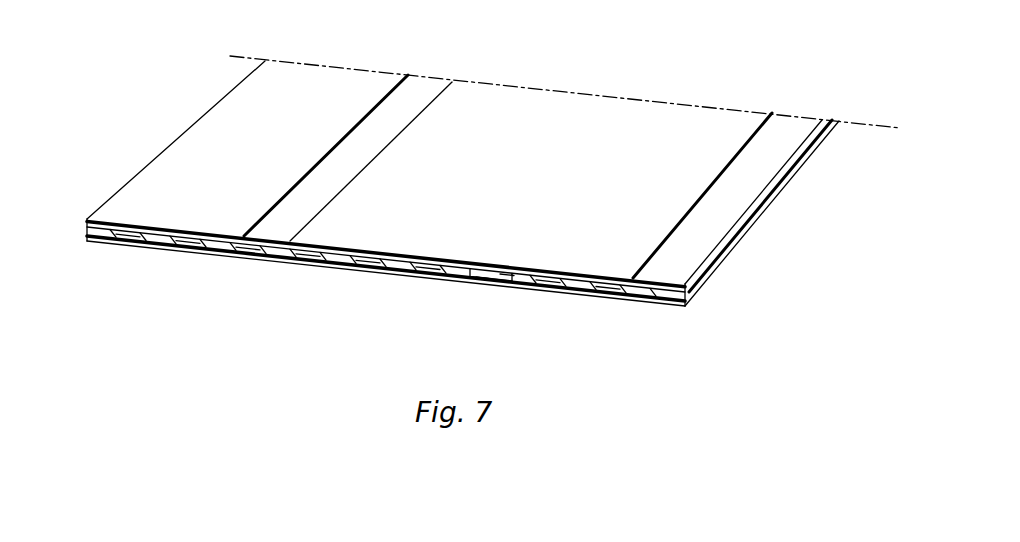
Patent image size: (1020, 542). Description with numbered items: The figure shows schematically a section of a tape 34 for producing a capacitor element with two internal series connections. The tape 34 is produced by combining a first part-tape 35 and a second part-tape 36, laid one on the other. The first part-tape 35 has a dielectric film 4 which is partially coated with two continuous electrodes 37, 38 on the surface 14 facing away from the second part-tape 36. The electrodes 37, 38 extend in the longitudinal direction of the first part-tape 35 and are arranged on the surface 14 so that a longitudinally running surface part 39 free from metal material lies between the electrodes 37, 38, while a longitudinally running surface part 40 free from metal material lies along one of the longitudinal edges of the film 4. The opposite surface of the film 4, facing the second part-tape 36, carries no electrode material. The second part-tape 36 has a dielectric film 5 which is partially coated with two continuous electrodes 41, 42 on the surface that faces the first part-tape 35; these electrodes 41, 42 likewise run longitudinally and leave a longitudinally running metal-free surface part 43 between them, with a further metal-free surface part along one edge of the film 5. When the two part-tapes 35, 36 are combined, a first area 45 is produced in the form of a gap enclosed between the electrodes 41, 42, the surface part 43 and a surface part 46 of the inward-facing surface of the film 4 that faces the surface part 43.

The dielectric film 4 is at (87, 223).
The dielectric film 5 is at (87, 239).
The surface 14 is at (412, 124).
The tape 34 is at (461, 50).
The first part-tape 35 is at (136, 112).
The second part-tape 36 is at (692, 330).
The electrode 37 is at (271, 154).
The electrode 38 is at (538, 182).
The surface part 39 is at (334, 204).
The surface part 40 is at (742, 213).
The electrode 41 is at (200, 251).
The electrode 42 is at (593, 289).
The surface part 43 is at (515, 283).
The first area 45 is at (492, 287).
The surface part 46 is at (473, 273).